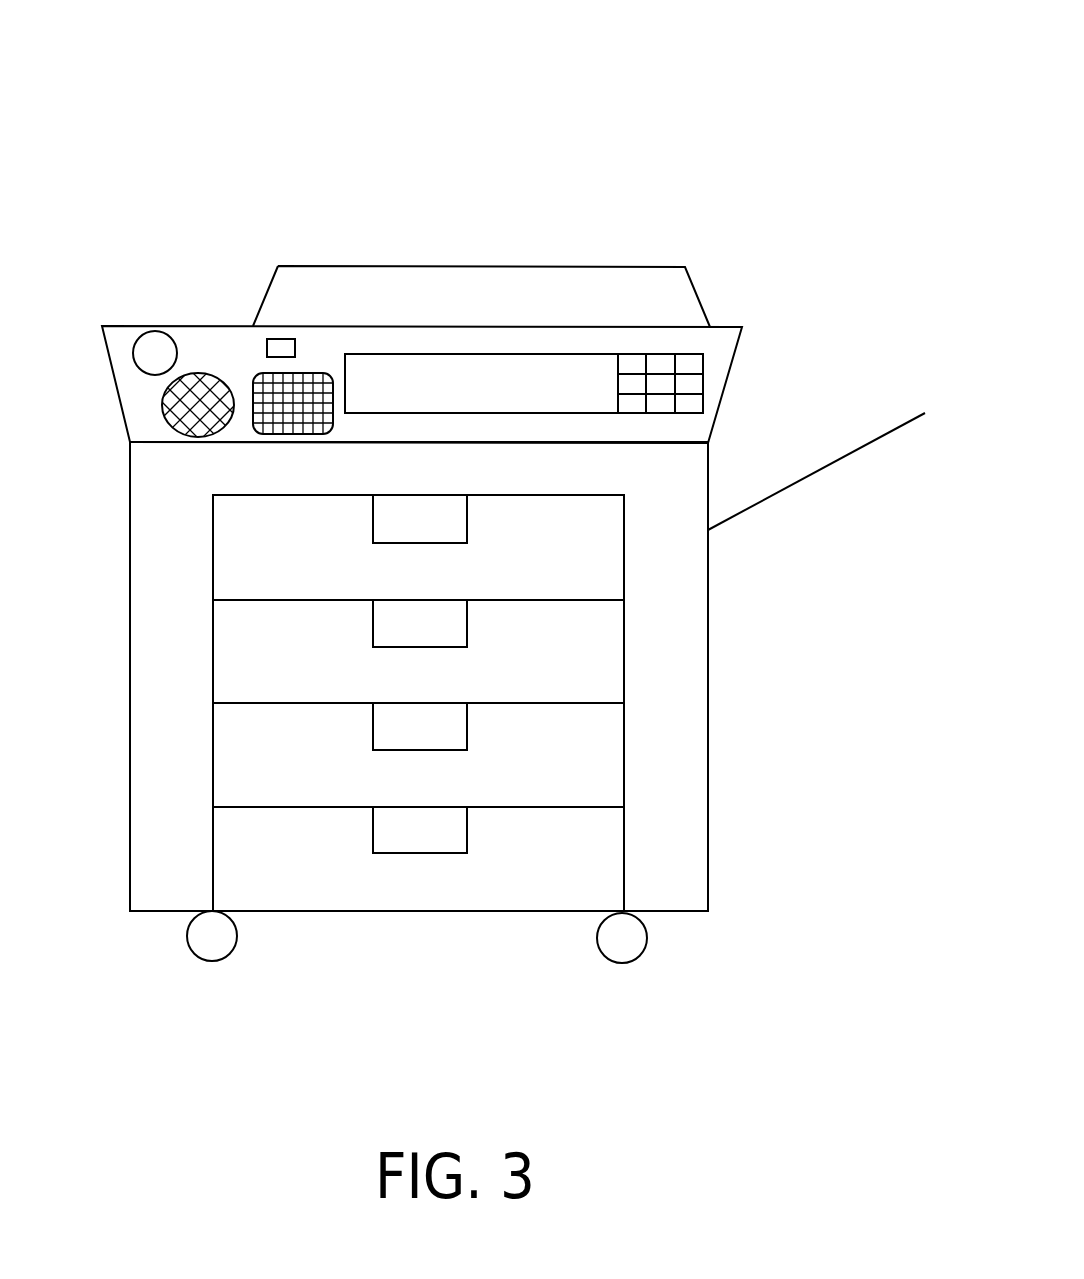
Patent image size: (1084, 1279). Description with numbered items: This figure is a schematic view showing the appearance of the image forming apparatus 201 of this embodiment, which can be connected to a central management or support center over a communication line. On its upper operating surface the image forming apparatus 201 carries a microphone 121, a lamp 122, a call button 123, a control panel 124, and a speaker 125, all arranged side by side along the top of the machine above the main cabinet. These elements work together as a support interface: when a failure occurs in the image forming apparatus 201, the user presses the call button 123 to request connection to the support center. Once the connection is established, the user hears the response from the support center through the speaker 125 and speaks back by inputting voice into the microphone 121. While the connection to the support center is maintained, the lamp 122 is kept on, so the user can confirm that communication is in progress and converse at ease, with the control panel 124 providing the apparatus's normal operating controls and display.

The image forming apparatus 201 is at (670, 193).
The microphone 121 is at (205, 380).
The lamp 122 is at (152, 350).
The call button 123 is at (282, 348).
The control panel 124 is at (528, 388).
The speaker 125 is at (308, 373).